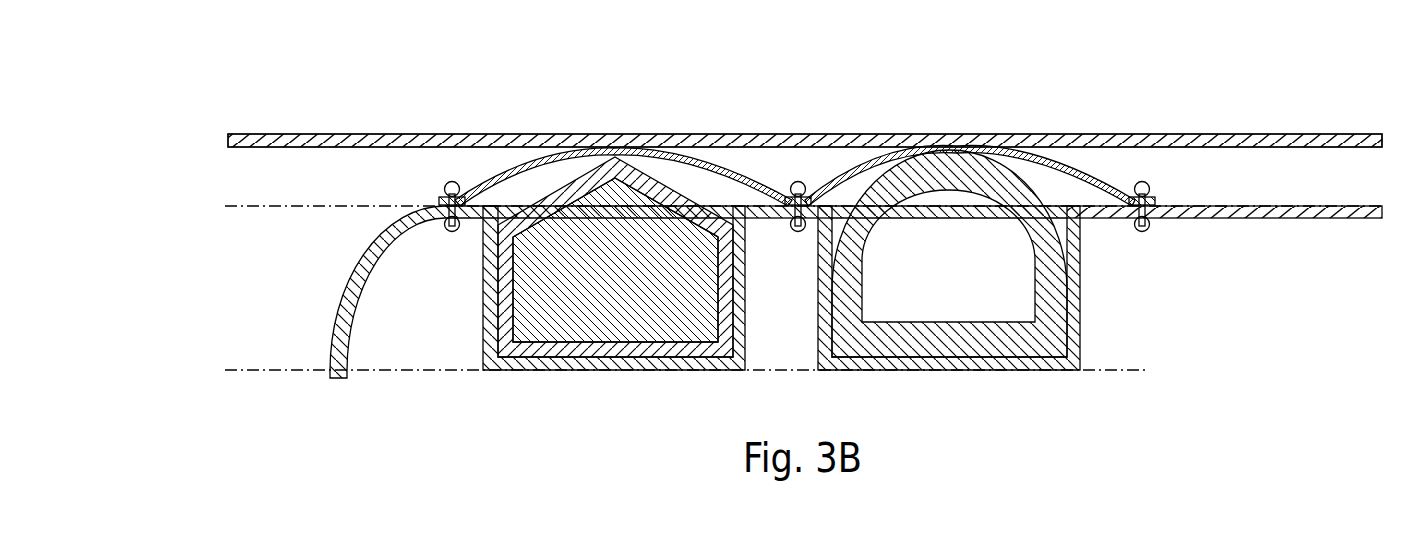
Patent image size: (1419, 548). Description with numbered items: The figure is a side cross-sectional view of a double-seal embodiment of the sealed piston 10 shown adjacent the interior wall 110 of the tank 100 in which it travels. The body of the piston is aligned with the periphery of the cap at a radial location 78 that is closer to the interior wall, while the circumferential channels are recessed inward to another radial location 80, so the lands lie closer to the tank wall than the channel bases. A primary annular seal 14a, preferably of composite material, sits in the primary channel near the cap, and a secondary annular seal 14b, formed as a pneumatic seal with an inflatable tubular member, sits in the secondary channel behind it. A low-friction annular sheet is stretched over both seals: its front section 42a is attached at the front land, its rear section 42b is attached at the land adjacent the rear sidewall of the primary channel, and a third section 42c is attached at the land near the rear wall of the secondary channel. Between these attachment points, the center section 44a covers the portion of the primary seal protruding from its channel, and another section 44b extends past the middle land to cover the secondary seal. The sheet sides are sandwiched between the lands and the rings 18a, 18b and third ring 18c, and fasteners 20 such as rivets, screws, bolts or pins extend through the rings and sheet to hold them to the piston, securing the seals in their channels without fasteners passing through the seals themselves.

The sealed piston 10 is at (226, 98).
The tank 100 is at (310, 142).
The interior wall 110 is at (357, 142).
The radial location 78 is at (240, 205).
The radial location 80 is at (243, 370).
The ring 18a is at (465, 192).
The ring 18b is at (793, 198).
The third ring 18c is at (1132, 198).
The primary annular seal 14a is at (562, 252).
The secondary annular seal 14b is at (907, 255).
The center section 44a is at (620, 150).
The section of the annular sheet 44b is at (955, 150).
The front section 42a is at (442, 196).
The rear section 42b is at (808, 196).
The third section 42c is at (1160, 196).
The fasteners 20 is at (452, 181).